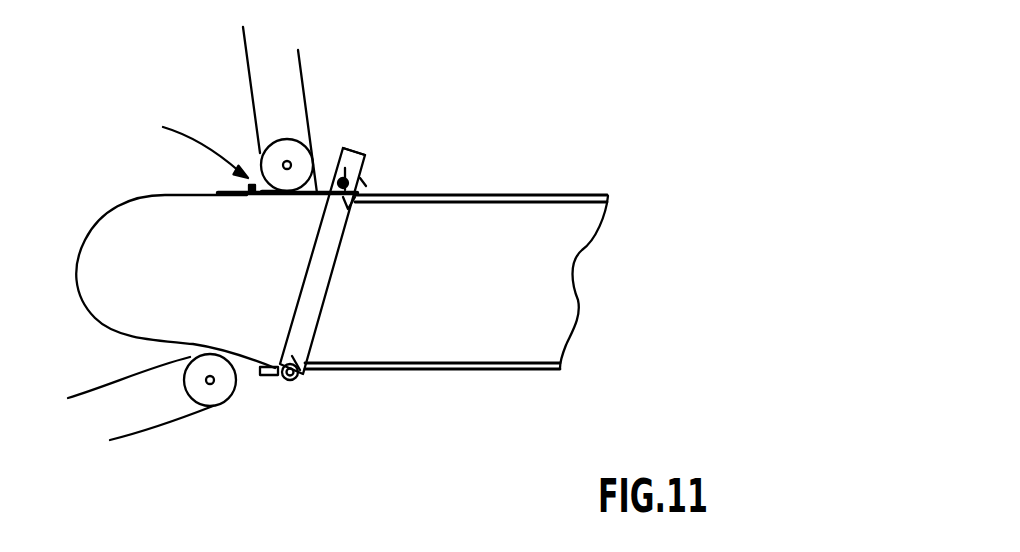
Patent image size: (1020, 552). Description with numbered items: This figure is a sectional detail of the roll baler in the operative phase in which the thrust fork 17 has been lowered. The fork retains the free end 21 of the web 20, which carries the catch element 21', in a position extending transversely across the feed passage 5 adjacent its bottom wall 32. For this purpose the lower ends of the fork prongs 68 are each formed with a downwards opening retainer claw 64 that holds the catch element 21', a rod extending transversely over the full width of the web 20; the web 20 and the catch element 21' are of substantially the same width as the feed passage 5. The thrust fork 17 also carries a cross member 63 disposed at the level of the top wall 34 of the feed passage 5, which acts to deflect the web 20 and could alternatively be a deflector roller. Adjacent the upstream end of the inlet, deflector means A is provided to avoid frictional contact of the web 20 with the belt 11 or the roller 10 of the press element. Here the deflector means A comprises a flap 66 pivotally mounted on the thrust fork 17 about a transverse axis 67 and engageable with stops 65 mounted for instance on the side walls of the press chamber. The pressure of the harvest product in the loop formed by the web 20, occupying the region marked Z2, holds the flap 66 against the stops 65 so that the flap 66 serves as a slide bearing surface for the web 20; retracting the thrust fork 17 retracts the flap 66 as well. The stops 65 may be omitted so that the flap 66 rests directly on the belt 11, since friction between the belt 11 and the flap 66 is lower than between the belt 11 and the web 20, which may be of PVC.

The feed passage 5 is at (508, 313).
The roller 10 is at (273, 160).
The belt 11 is at (250, 60).
The thrust fork 17 is at (350, 150).
The web 20 is at (120, 200).
The free end 21 is at (252, 413).
The catch element 21' is at (290, 411).
The bottom wall 32 is at (523, 370).
The top wall 34 is at (532, 194).
The cross member 63 is at (362, 183).
The retainer claw 64 is at (315, 343).
The stop 65 is at (257, 197).
The flap 66 is at (277, 197).
The transverse axis 67 is at (352, 200).
The fork prong 68 is at (327, 255).
The deflector means A is at (192, 138).
The zone Z2 is at (137, 268).